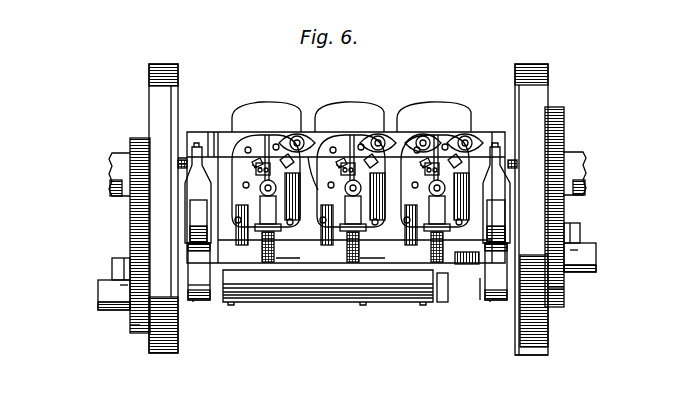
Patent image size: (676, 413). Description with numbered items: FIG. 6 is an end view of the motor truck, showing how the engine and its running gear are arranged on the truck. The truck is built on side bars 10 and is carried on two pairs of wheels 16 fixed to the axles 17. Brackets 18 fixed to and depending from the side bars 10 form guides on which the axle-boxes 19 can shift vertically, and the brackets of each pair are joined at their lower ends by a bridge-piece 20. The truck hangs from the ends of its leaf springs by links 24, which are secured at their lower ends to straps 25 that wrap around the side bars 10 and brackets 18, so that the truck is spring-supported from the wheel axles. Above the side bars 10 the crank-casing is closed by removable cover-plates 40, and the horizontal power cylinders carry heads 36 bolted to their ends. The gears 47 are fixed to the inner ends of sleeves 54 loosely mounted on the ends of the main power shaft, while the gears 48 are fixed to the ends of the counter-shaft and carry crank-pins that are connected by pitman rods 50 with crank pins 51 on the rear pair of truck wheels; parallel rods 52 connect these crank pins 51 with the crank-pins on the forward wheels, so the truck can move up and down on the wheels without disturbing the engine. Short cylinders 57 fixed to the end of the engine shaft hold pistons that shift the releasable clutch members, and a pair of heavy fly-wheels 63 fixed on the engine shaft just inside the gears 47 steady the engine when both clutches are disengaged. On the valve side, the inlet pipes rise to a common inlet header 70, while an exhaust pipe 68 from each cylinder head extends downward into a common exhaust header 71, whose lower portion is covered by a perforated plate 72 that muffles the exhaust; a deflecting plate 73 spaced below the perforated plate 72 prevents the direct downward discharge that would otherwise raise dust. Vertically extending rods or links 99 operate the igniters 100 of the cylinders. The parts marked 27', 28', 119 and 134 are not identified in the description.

The side bars 10 is at (196, 215).
The wheels 16 is at (548, 345).
The axles 17 is at (397, 265).
The brackets 18 is at (200, 270).
The axle-boxes 19 is at (480, 280).
The bridge-piece 20 is at (192, 300).
The links 24 is at (197, 164).
The straps 25 is at (190, 222).
The gear 27' is at (577, 194).
The hub 28' is at (600, 290).
The heads 36 is at (256, 138).
The cover-plates 40 is at (262, 102).
The gears 47 is at (138, 138).
The gears 48 is at (135, 330).
The pitman rods 50 is at (120, 272).
The crank pins 51 is at (122, 310).
The parallel rods 52 is at (100, 296).
The sleeves 54 is at (118, 153).
The short cylinders 57 is at (358, 190).
The fly-wheels 63 is at (178, 68).
The exhaust pipe 68 is at (431, 244).
The inlet header 70 is at (412, 133).
The exhaust header 71 is at (360, 284).
The perforated plate 72 is at (298, 290).
The deflecting plate 73 is at (300, 300).
The igniter operating rods 99 is at (278, 262).
The igniters 100 is at (262, 165).
The rod 119 is at (216, 133).
The cam disc 134 is at (304, 132).